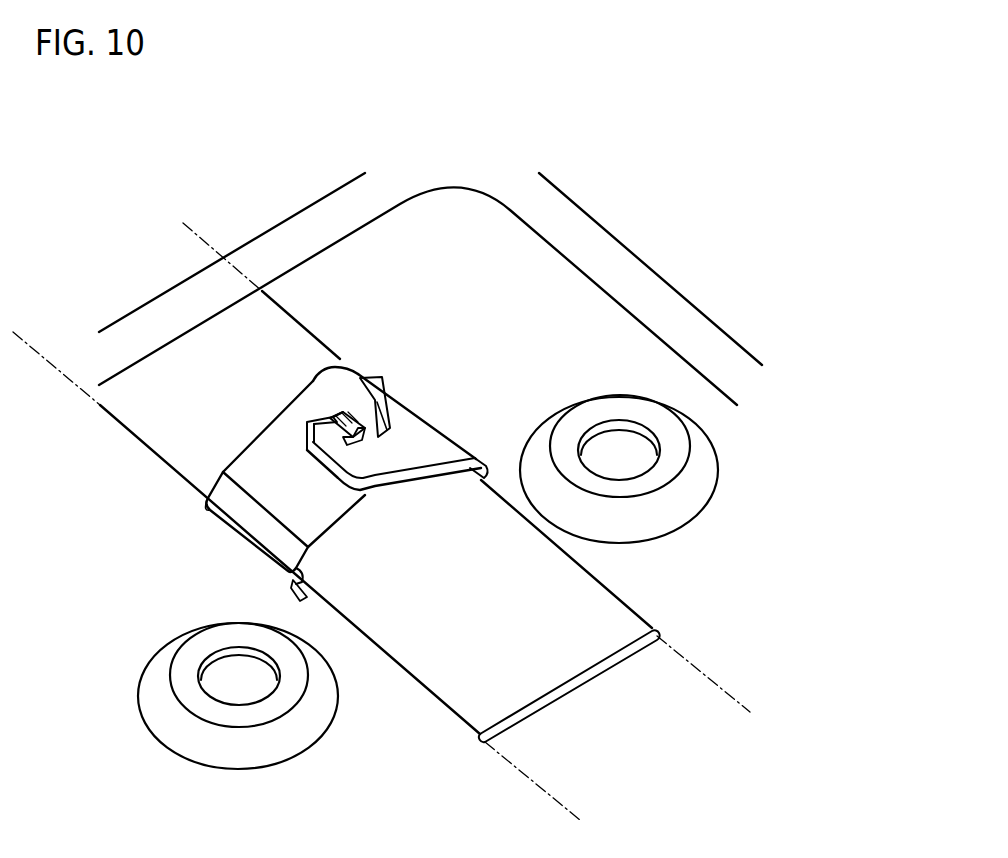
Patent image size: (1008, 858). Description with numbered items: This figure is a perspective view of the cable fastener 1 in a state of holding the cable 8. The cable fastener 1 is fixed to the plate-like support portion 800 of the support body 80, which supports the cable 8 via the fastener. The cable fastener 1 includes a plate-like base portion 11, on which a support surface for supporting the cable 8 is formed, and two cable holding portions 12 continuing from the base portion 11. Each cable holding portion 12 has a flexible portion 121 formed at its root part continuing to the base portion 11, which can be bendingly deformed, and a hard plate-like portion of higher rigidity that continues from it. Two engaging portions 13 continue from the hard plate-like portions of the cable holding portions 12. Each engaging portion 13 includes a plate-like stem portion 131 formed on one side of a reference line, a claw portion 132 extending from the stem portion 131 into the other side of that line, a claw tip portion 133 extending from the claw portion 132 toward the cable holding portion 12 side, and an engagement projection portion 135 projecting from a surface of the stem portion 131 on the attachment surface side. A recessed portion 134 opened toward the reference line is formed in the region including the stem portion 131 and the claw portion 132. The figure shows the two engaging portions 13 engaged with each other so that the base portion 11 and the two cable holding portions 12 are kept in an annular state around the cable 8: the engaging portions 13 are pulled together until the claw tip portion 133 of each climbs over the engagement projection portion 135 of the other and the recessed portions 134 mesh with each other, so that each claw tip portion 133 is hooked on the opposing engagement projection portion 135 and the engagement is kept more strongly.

The cable fastener 1 is at (432, 367).
The cable 8 is at (430, 693).
The base portion 11 is at (293, 596).
The cable holding portion 12 is at (242, 451).
The flexible portion 121 is at (209, 512).
The engaging portion 13 is at (307, 386).
The stem portion 131 is at (312, 372).
The claw portion 132 is at (305, 440).
The claw tip portion 133 is at (327, 415).
The recessed portion 134 is at (307, 450).
The engagement projection portion 135 is at (336, 418).
The support body 80 is at (612, 232).
The plate-like support portion 800 is at (317, 305).